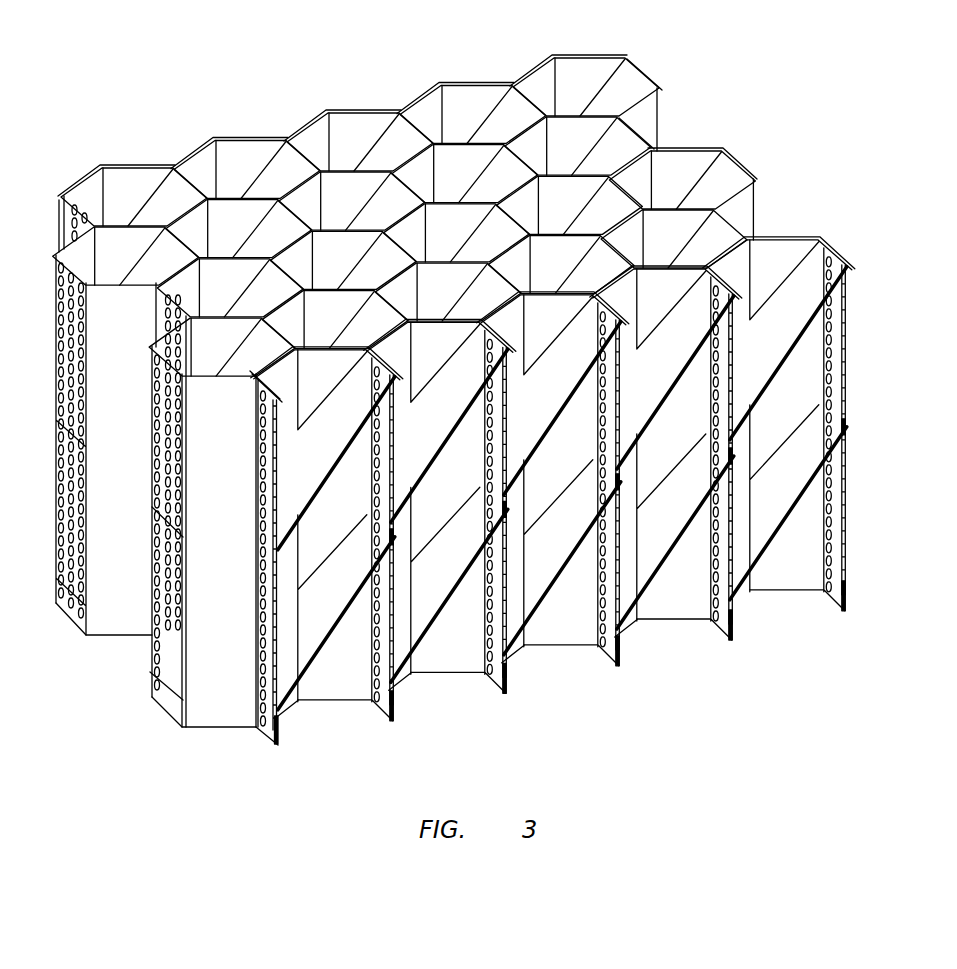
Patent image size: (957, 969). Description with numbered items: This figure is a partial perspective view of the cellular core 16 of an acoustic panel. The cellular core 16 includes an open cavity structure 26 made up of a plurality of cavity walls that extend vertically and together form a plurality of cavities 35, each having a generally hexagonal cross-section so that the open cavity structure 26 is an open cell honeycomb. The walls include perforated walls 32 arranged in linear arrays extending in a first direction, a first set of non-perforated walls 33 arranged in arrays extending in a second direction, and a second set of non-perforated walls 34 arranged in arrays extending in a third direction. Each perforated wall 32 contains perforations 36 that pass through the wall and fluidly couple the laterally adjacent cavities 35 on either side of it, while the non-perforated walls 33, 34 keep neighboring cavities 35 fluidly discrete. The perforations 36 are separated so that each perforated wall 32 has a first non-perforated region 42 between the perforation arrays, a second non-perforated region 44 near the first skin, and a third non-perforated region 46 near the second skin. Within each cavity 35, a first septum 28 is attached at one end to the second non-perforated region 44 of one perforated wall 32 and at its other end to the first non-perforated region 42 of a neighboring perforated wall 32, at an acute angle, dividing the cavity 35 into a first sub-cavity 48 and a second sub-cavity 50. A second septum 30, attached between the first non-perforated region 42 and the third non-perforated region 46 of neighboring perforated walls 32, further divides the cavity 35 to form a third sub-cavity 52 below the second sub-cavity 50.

The cellular core 16 is at (805, 121).
The open cavity structure 26 is at (799, 231).
The first septum 28 is at (727, 185).
The second septum 30 is at (790, 488).
The perforated wall 32 is at (850, 425).
The non-perforated wall 33 is at (217, 717).
The non-perforated wall 34 is at (293, 712).
The cavity 35 is at (362, 128).
The perforation 36 is at (847, 320).
The first non-perforated region 42 is at (262, 551).
The second non-perforated region 44 is at (248, 395).
The third non-perforated region 46 is at (254, 725).
The first sub-cavity 48 is at (773, 265).
The second sub-cavity 50 is at (784, 400).
The third sub-cavity 52 is at (788, 558).